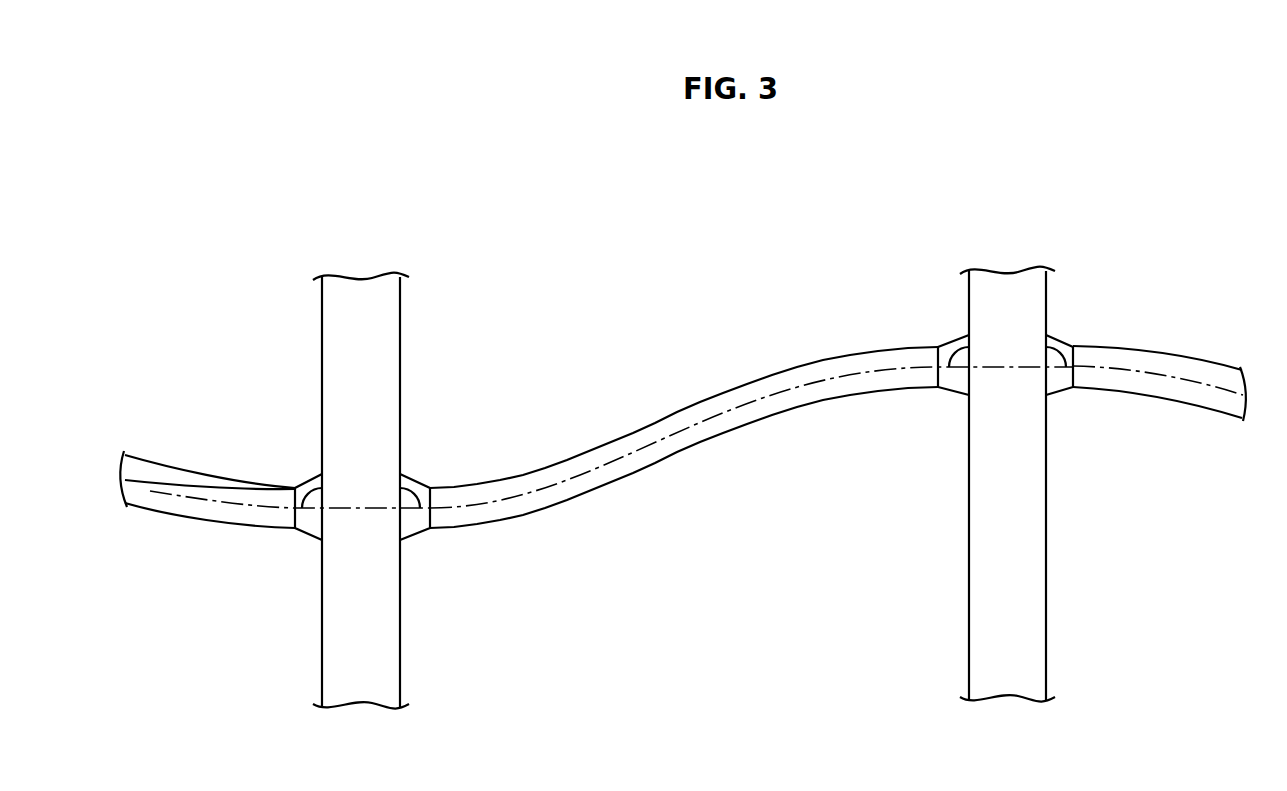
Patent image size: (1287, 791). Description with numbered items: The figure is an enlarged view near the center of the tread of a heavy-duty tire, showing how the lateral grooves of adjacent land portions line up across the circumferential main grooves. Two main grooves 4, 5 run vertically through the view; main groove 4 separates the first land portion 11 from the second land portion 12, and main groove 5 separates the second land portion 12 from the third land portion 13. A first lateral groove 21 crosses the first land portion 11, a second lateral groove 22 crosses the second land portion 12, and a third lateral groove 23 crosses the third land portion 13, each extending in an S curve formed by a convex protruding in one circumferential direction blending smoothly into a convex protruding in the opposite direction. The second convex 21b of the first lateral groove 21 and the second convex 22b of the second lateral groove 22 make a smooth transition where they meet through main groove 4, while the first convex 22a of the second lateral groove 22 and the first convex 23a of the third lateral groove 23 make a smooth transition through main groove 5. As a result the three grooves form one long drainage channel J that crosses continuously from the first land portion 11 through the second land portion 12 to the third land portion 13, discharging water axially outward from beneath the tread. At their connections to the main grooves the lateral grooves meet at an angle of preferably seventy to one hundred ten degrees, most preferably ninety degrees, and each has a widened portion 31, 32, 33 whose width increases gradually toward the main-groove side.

The main groove 4 is at (360, 308).
The main groove 5 is at (1004, 310).
The first land portion 11 is at (100, 595).
The second land portion 12 is at (721, 590).
The third land portion 13 is at (1216, 585).
The first lateral groove 21 is at (275, 450).
The second convex 21b is at (188, 549).
The second lateral groove 22 is at (751, 435).
The first convex 22a is at (812, 355).
The second convex 22b is at (533, 535).
The third lateral groove 23 is at (1168, 268).
The first convex 23a is at (1162, 328).
The widened portion 31 is at (308, 535).
The widened portion 32 is at (414, 536).
The widened portion 33 is at (1058, 392).
The drainage channel J is at (540, 419).